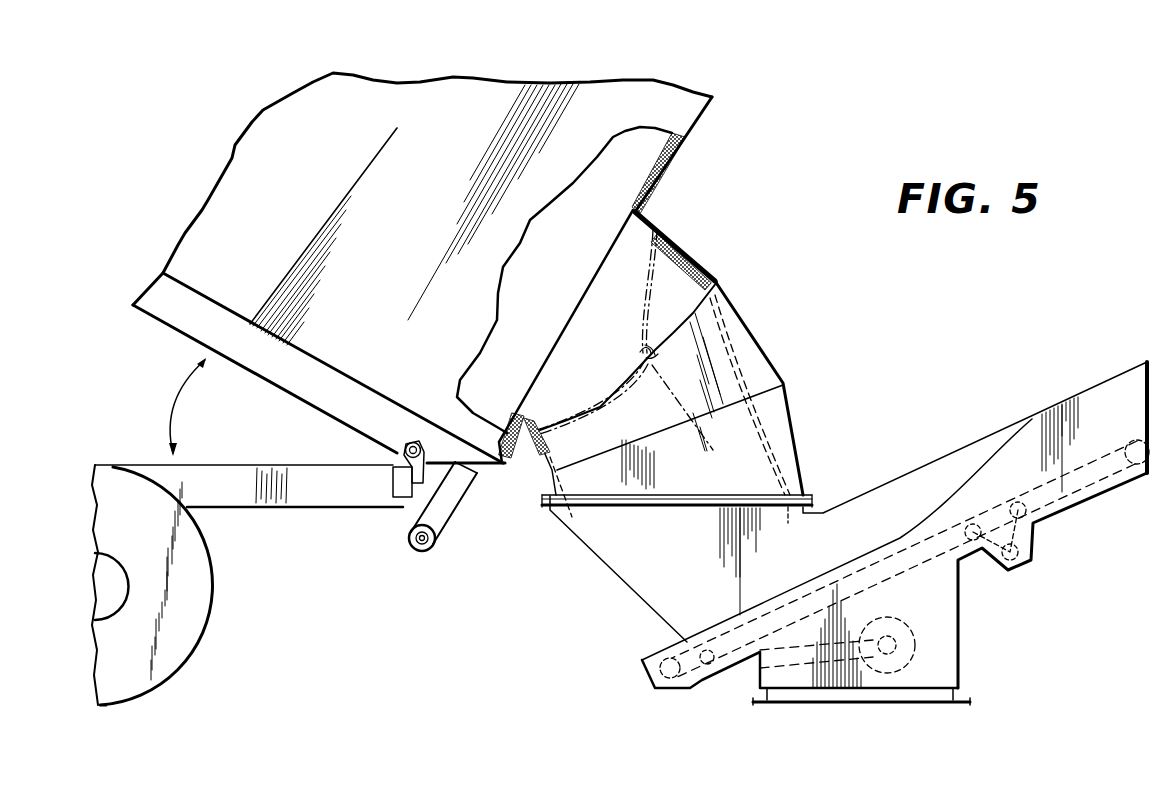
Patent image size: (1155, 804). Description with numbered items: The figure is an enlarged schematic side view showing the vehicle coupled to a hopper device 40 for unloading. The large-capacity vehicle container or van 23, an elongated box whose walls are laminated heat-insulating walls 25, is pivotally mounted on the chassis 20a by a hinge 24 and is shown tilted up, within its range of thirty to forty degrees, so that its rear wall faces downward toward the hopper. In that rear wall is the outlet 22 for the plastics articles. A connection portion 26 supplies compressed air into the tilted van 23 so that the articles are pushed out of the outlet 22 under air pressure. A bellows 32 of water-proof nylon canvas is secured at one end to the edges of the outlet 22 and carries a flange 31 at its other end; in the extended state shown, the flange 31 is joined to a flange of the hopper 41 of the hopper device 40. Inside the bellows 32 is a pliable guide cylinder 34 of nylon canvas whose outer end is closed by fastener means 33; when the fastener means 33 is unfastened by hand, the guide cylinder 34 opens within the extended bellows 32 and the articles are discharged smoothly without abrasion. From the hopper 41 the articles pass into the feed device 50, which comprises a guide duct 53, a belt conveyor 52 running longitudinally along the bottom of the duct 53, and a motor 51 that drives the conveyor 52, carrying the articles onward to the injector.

The chassis 20a is at (307, 497).
The outlet 22 is at (630, 233).
The vehicle container or van 23 is at (683, 110).
The hinge 24 is at (407, 447).
The heat-insulating wall 25 is at (647, 180).
The connection portion 26 is at (437, 517).
The flange 31 is at (812, 495).
The bellows 32 is at (763, 343).
The fastener means 33 is at (638, 356).
The pliable guide cylinder 34 is at (653, 278).
The hopper device 40 is at (573, 547).
The hopper 41 is at (633, 575).
The feed device 50 is at (1012, 412).
The motor 51 is at (907, 645).
The belt conveyor 52 is at (1072, 485).
The guide duct 53 is at (1070, 398).